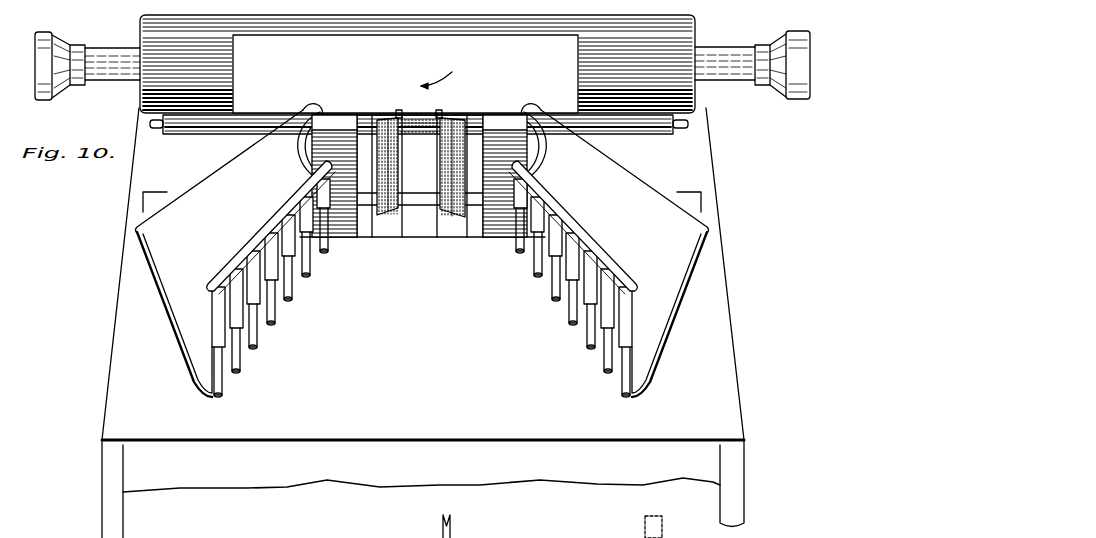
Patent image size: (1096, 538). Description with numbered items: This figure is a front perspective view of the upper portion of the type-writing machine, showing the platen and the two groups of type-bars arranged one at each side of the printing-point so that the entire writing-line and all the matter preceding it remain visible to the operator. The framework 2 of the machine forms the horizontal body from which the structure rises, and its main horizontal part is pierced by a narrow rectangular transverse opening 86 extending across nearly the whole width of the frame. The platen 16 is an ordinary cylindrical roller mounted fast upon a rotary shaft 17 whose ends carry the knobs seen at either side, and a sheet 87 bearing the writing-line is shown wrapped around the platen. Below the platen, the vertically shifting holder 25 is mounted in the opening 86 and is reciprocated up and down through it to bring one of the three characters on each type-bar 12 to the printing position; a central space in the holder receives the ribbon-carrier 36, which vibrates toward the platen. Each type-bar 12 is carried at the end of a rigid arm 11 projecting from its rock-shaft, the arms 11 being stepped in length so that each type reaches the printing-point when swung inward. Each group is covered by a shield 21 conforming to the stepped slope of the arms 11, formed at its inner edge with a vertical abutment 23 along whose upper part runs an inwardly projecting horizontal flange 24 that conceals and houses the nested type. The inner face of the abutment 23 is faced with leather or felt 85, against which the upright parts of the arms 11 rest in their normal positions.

The framework of the machine 2 is at (117, 313).
The rigid arm 11 is at (273, 300).
The type-bar 12 is at (302, 247).
The platen 16 is at (417, 64).
The rotary shaft 17 is at (102, 50).
The shield 21 is at (185, 344).
The vertical abutment 23 is at (211, 322).
The horizontal flange 24 is at (252, 242).
The shifting holder 25 is at (352, 232).
The ribbon-carrier 36 is at (438, 148).
The leather or felt 85 is at (212, 363).
The transverse opening 86 is at (165, 192).
The paper sheet 87 is at (233, 50).